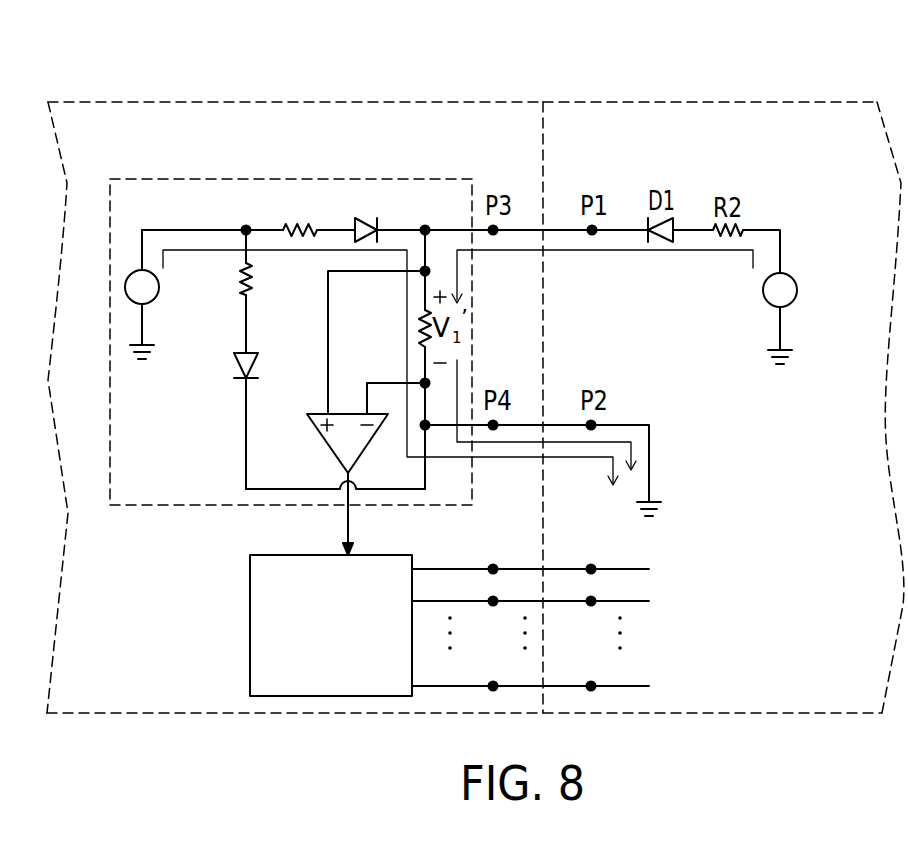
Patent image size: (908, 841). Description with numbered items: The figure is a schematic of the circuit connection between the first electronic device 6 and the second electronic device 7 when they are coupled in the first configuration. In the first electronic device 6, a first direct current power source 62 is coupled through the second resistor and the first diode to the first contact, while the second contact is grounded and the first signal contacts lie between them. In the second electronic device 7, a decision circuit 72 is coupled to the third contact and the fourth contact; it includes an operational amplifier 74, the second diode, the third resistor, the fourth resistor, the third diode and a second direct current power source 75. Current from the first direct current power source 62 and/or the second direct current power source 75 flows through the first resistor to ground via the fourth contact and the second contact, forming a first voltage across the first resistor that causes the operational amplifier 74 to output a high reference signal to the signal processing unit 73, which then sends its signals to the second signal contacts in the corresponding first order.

The first electronic device 6 is at (618, 102).
The second electronic device 7 is at (468, 102).
The first direct current power source 62 is at (797, 290).
The decision circuit 72 is at (330, 179).
The signal processing unit 73 is at (250, 592).
The operational amplifier 74 is at (328, 445).
The second direct current power source 75 is at (159, 287).